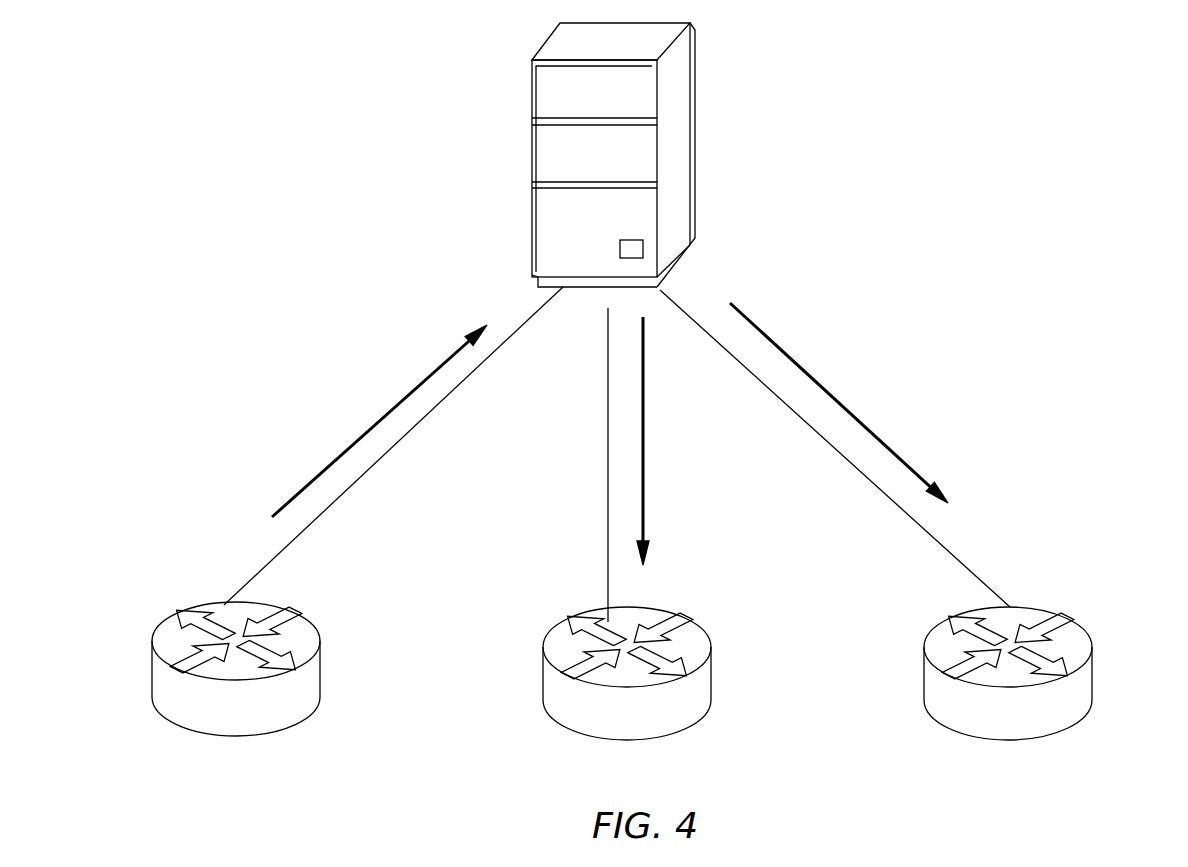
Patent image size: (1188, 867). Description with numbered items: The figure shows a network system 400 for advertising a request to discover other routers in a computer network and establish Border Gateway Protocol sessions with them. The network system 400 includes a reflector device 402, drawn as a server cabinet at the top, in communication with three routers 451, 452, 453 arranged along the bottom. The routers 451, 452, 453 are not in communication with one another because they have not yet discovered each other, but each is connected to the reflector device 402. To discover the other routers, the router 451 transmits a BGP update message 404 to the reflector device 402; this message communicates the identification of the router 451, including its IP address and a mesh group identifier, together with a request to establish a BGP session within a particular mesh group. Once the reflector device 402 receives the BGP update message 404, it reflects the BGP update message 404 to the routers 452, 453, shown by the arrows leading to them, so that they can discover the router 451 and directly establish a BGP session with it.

The network system 400 is at (624, 381).
The reflector device 402 is at (524, 155).
The BGP update message 404 is at (620, 434).
The router 451 is at (238, 669).
The router 452 is at (628, 673).
The router 453 is at (1009, 673).